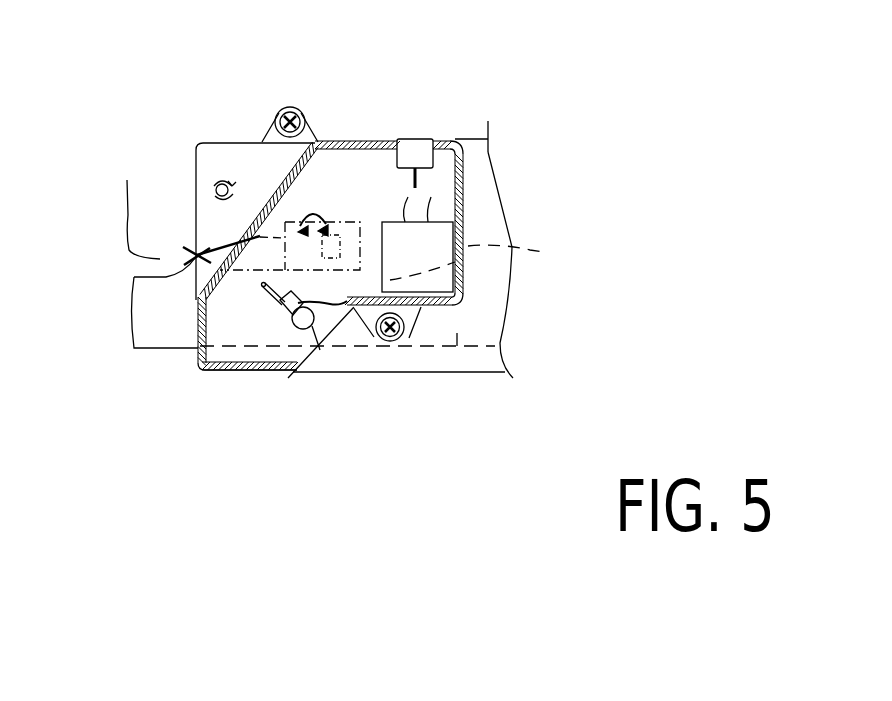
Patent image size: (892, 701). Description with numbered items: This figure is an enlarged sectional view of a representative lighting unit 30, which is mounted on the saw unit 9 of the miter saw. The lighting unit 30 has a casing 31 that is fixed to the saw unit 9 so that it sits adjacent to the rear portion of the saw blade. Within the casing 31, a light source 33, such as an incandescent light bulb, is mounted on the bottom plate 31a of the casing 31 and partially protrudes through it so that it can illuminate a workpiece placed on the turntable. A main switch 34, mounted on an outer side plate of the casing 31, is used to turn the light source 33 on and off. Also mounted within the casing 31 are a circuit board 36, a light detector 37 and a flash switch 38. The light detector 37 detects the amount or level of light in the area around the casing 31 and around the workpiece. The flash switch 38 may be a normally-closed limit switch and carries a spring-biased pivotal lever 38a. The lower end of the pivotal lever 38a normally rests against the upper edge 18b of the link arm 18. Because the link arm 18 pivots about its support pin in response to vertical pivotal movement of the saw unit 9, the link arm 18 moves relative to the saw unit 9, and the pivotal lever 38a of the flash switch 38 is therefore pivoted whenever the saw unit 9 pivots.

The saw unit 9 is at (136, 229).
The link arm 18 is at (156, 337).
The upper edge 18b is at (164, 275).
The lighting unit 30 is at (378, 102).
The casing 31 is at (450, 139).
The bottom plate 31a is at (218, 373).
The light source 33 is at (302, 329).
The main switch 34 is at (346, 262).
The circuit board 36 is at (430, 241).
The light detector 37 is at (420, 138).
The flash switch 38 is at (262, 178).
The pivotal lever 38a is at (229, 245).